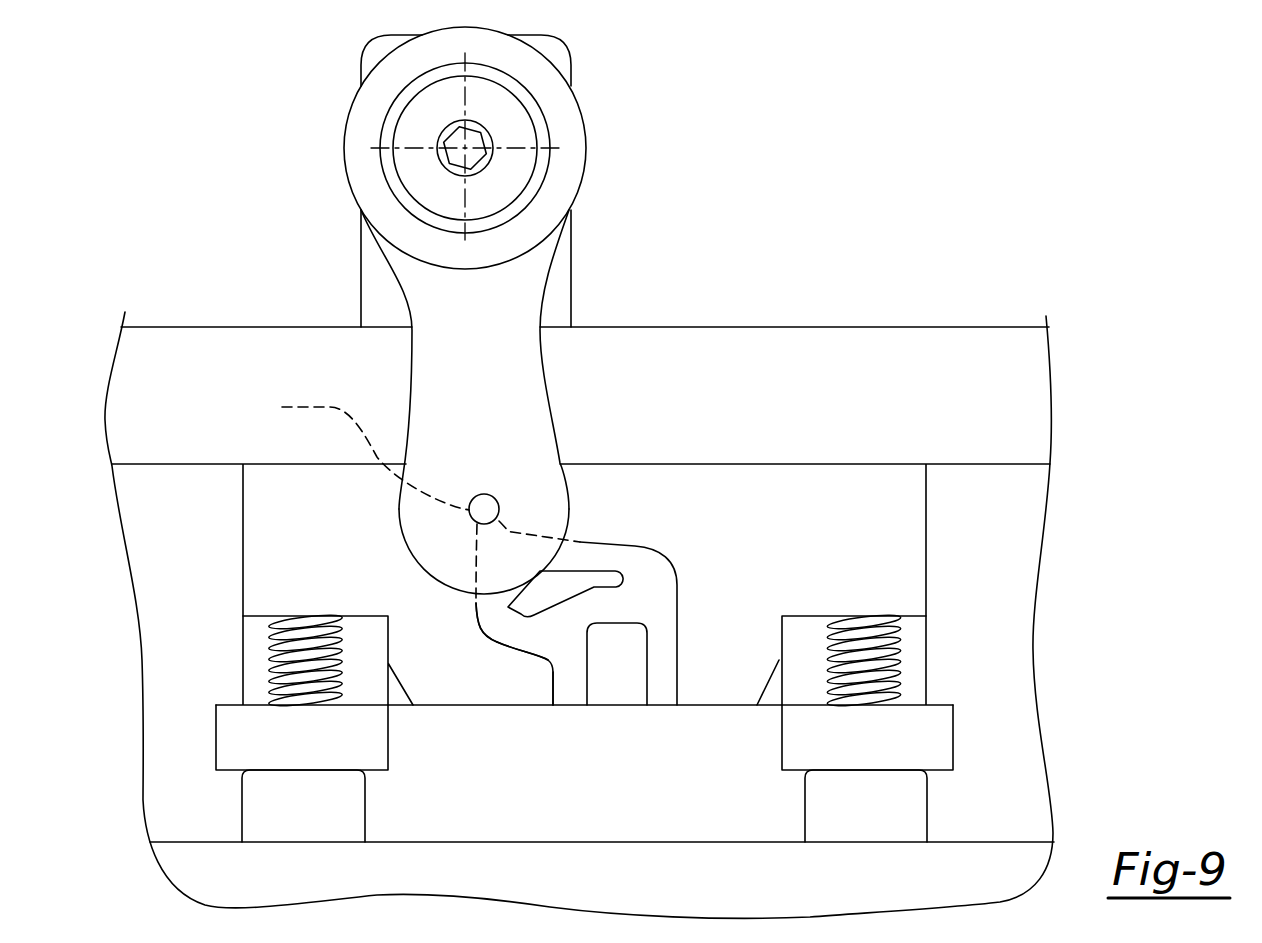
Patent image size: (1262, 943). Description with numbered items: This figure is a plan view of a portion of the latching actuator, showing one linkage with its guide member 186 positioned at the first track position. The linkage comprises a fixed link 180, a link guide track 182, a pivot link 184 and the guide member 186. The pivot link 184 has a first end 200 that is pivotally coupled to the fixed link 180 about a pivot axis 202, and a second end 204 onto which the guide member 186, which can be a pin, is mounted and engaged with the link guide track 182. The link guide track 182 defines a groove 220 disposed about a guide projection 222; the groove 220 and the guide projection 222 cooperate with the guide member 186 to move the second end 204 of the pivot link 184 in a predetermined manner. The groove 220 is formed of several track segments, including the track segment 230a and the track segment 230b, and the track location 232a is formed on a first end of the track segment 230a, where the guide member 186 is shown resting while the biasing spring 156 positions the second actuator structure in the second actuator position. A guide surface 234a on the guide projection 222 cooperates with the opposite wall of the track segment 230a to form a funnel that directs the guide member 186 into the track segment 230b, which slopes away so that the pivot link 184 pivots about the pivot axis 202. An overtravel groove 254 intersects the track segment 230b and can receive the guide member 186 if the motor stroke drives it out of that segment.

The biasing spring 156 is at (902, 643).
The fixed link 180 is at (377, 267).
The link guide track 182 is at (853, 520).
The pivot link 184 is at (500, 288).
The guide member 186 is at (490, 494).
The first end 200 is at (550, 183).
The pivot axis 202 is at (465, 148).
The second end 204 is at (442, 547).
The groove 220 is at (557, 639).
The guide projection 222 is at (570, 583).
The track segment 230a is at (493, 603).
The track segment 230b is at (525, 630).
The track location 232a is at (404, 497).
The guide surface 234a is at (518, 592).
The overtravel groove 254 is at (573, 690).